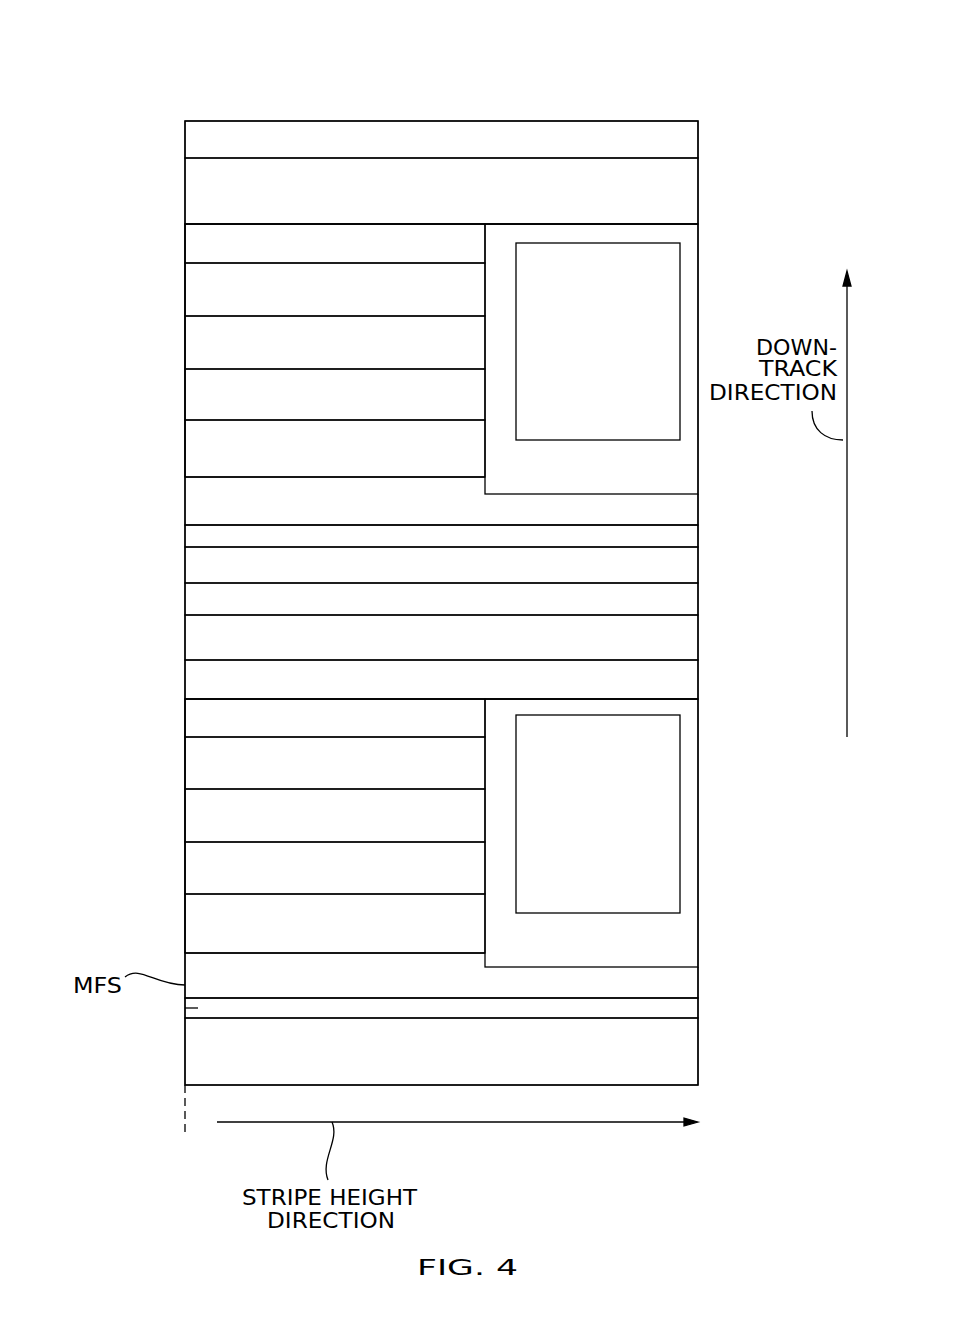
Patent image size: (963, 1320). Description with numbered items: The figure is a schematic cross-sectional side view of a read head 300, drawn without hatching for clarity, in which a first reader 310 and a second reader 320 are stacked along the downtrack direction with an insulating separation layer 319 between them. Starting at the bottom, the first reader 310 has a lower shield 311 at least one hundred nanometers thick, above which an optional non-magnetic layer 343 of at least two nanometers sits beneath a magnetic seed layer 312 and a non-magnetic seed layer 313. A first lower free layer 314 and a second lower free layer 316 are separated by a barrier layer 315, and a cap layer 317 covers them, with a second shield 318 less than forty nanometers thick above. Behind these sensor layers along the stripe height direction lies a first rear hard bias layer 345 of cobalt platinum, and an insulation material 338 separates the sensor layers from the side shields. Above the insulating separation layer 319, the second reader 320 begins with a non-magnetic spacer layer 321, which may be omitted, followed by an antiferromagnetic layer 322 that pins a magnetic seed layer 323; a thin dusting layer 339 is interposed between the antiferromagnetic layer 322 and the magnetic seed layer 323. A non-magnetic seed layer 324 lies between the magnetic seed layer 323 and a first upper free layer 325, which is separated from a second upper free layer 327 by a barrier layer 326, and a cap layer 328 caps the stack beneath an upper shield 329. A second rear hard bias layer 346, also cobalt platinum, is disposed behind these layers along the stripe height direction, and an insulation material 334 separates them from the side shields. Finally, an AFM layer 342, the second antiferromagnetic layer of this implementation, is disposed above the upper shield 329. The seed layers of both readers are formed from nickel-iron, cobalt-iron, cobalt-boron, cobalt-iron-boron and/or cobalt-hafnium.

The read head 300 is at (132, 72).
The first reader 310 is at (150, 810).
The second reader 320 is at (160, 398).
The lower shield 311 is at (367, 1065).
The magnetic seed layer 312 is at (468, 989).
The non-magnetic seed layer 313 is at (435, 935).
The first lower free layer 314 is at (435, 881).
The barrier layer 315 is at (435, 829).
The second lower free layer 316 is at (435, 776).
The cap layer 317 is at (435, 729).
The second shield 318 is at (367, 690).
The insulating separation layer 319 is at (367, 648).
The non-magnetic spacer layer 321 is at (367, 611).
The antiferromagnetic (AFM) layer 322 is at (367, 577).
The magnetic seed layer 323 is at (367, 514).
The non-magnetic seed layer 324 is at (435, 460).
The first upper free layer 325 is at (435, 407).
The barrier layer 326 is at (435, 355).
The second upper free layer 327 is at (435, 303).
The cap layer 328 is at (435, 256).
The upper shield 329 is at (367, 204).
The insulation material 334 is at (626, 478).
The insulation material 338 is at (626, 952).
The thin dusting layer 339 is at (198, 537).
The AFM layer 342 is at (367, 152).
The non-magnetic layer 343 is at (185, 1010).
The first rear hard bias layer 345 is at (626, 823).
The second rear hard bias layer 346 is at (626, 350).